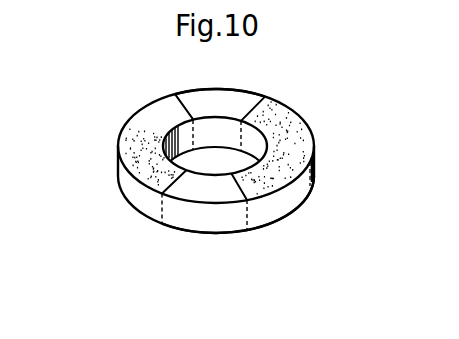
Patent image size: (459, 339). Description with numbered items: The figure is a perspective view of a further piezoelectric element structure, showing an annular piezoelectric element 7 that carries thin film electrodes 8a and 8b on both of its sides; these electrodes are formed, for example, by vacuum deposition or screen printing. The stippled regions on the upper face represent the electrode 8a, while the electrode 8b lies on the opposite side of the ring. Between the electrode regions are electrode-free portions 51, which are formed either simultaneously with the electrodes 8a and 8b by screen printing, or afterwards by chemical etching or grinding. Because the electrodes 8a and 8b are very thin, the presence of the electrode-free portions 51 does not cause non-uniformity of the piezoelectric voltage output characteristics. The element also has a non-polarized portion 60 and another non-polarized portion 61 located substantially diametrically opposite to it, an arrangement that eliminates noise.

The piezoelectric element 7 is at (114, 171).
The thin film electrode 8a is at (140, 118).
The thin film electrode 8b is at (230, 233).
The electrode-free portion 51 is at (228, 103).
The non-polarized portion 60 is at (197, 229).
The non-polarized portion 61 is at (208, 88).